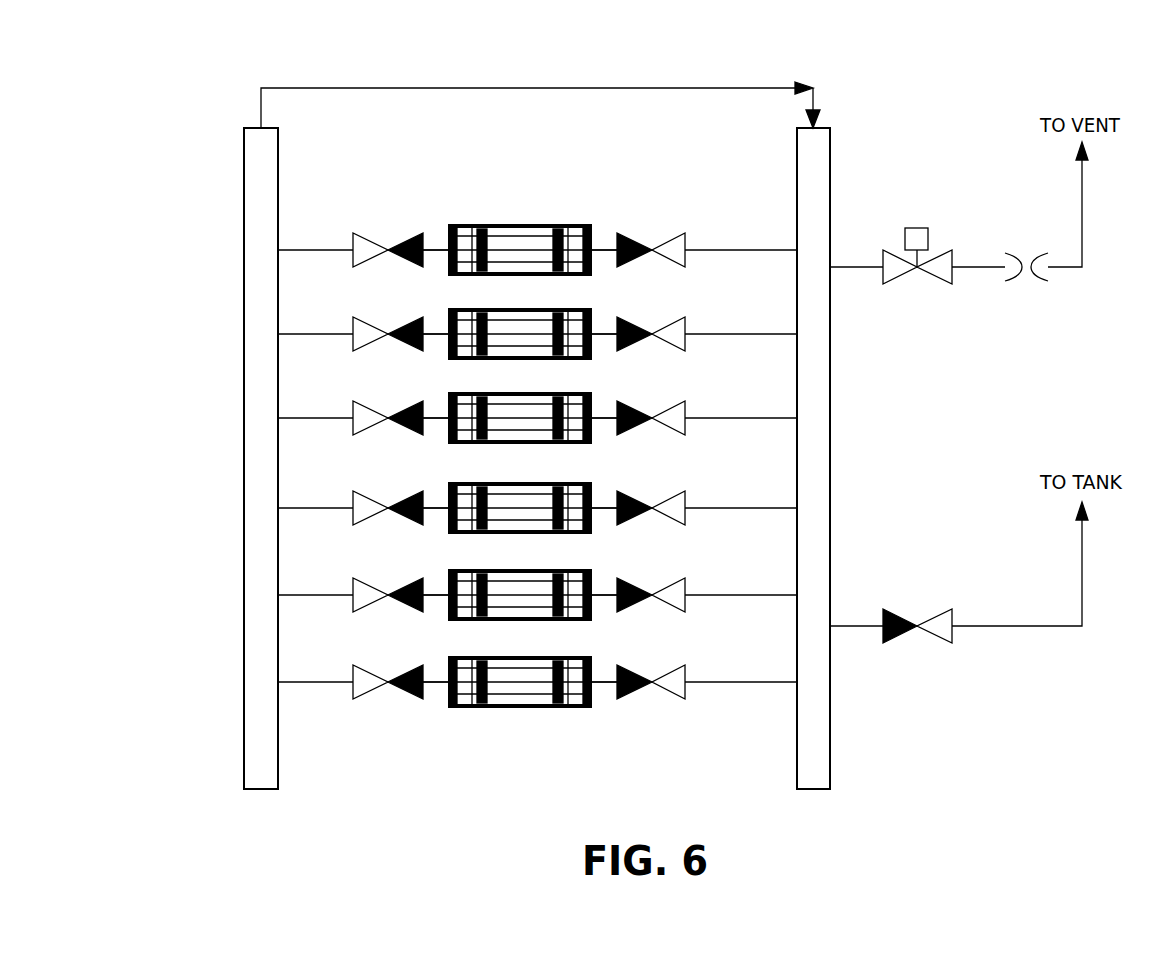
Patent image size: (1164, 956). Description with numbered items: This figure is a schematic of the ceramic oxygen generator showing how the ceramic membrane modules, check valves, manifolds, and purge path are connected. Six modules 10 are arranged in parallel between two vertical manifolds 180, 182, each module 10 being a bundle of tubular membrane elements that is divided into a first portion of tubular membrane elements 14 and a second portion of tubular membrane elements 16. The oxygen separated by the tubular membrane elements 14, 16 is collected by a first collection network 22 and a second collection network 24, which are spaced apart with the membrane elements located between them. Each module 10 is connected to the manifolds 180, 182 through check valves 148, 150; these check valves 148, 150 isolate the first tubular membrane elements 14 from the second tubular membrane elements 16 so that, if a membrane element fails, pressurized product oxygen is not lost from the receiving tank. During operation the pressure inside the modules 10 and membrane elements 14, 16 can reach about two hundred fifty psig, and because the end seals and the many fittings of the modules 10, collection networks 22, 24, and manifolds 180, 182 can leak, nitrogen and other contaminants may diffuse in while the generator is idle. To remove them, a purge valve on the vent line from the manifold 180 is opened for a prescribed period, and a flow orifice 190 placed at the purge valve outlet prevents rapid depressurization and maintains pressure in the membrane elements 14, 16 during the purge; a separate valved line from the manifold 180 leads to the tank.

The module 10 is at (508, 274).
The first portion of tubular membrane elements 14 is at (517, 240).
The second portion of tubular membrane elements 16 is at (542, 258).
The first collection network 22 is at (438, 246).
The second collection network 24 is at (600, 248).
The check valve 148 is at (668, 262).
The check valve 150 is at (366, 258).
The manifold 180 is at (817, 745).
The manifold 182 is at (258, 745).
The flow orifice 190 is at (1036, 274).